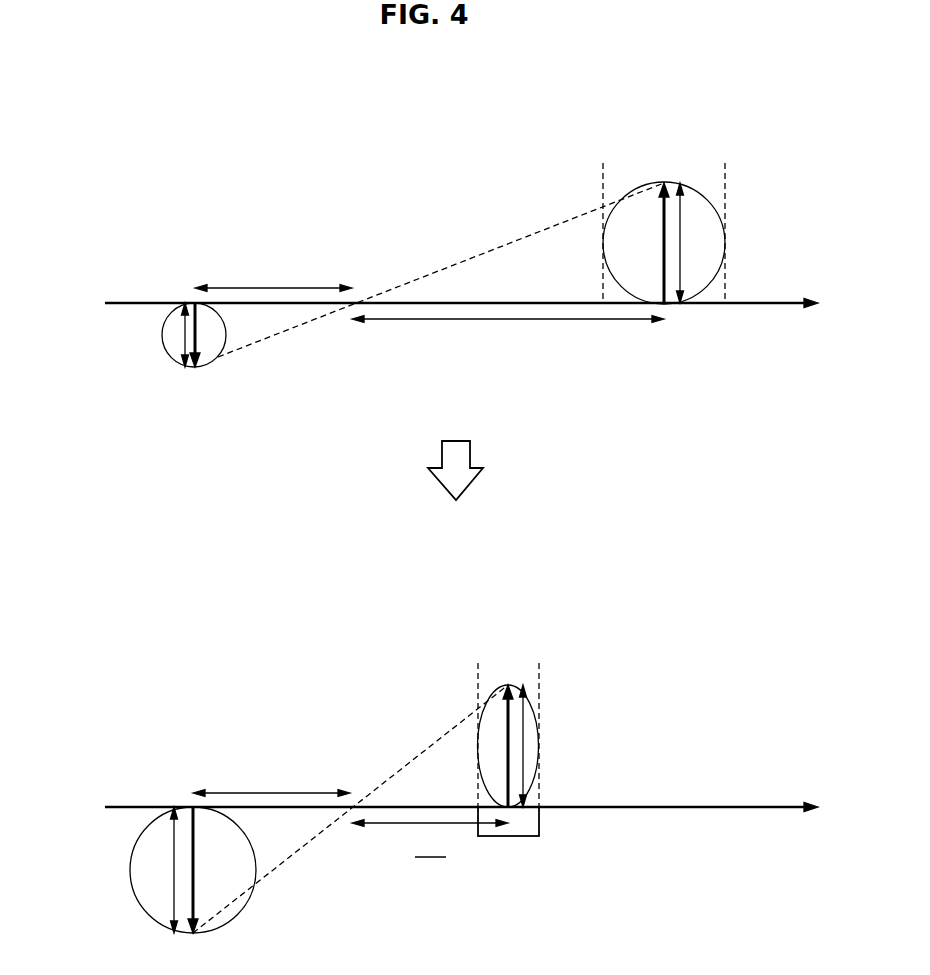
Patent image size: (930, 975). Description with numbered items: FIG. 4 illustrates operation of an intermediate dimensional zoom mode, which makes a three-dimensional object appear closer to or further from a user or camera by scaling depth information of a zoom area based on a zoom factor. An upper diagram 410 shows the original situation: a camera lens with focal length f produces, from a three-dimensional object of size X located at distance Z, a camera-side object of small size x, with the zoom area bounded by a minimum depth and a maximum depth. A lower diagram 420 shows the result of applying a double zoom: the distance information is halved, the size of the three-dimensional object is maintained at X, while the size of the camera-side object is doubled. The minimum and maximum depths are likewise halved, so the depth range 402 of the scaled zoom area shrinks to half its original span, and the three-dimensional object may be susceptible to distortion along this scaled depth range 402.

The depth range 402 is at (508, 836).
The original projection diagram 410 is at (422, 90).
The scaled projection diagram 420 is at (490, 586).